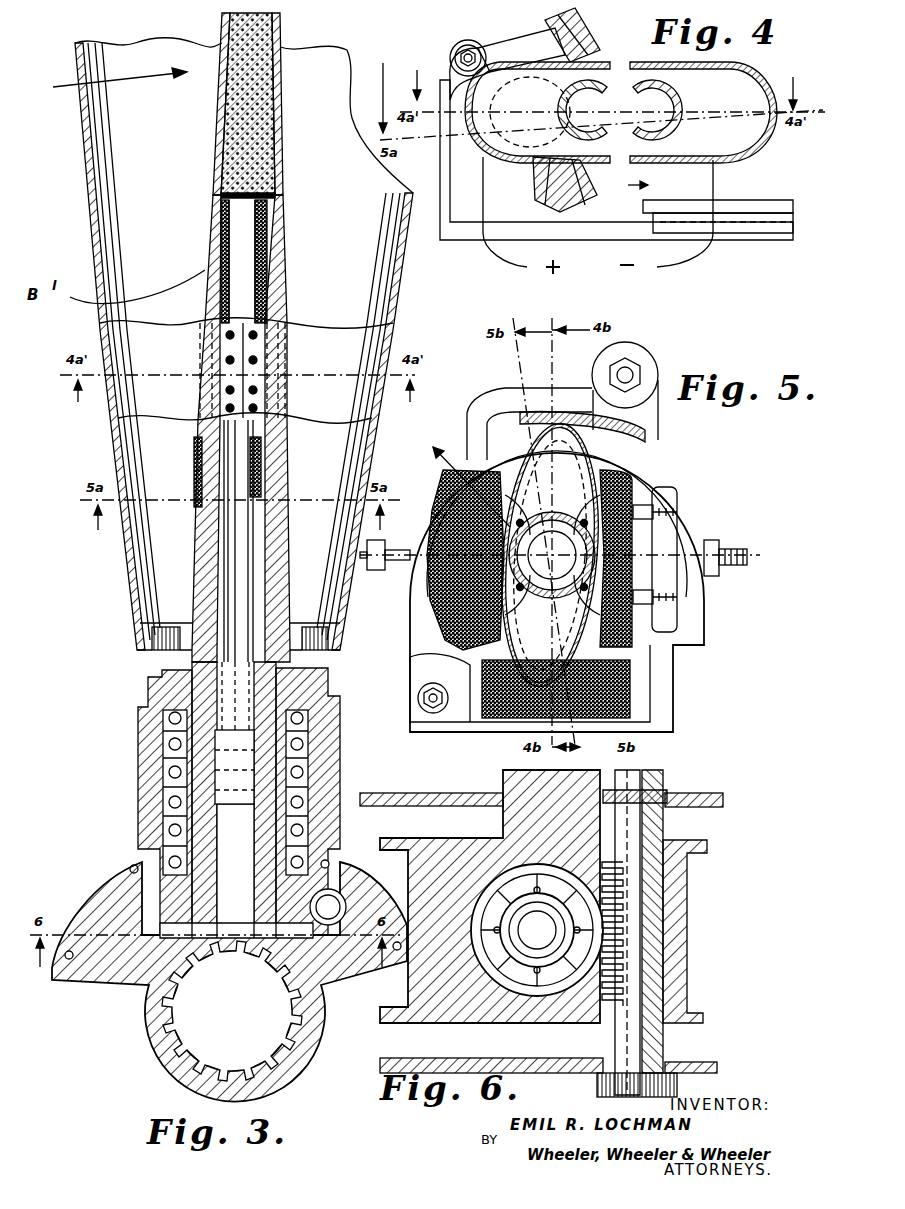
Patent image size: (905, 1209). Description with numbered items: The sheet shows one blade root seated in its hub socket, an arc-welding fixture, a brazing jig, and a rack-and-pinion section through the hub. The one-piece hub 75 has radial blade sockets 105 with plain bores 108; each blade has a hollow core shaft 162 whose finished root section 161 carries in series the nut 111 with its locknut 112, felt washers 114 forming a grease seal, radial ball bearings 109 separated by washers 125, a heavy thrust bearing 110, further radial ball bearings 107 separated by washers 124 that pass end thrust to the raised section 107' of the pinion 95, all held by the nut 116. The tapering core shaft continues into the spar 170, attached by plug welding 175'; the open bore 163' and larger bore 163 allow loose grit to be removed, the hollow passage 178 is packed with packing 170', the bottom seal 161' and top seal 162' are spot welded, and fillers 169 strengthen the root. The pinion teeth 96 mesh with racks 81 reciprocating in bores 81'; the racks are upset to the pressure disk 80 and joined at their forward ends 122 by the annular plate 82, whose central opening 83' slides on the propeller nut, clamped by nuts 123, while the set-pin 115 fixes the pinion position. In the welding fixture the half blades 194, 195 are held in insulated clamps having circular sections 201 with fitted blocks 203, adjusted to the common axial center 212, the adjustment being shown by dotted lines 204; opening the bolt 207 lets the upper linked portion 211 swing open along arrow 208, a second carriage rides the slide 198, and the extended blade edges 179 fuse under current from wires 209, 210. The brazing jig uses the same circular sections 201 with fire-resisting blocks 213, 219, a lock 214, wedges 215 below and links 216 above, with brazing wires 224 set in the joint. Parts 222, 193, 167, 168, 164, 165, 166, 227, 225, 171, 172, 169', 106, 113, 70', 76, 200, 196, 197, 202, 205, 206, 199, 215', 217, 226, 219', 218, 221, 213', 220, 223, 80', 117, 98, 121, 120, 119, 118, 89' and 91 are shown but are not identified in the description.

In FIG. 3, the bowl wall 222 is at (118, 80).
In FIG. 3, the section zone 193 is at (258, 392).
In FIG. 3, the spar 170 is at (221, 337).
In FIG. 3, the packing 170' is at (306, 95).
In FIG. 3, the hollow passage 178 is at (226, 145).
In FIG. 3, the top seal 162' is at (279, 191).
In FIG. 3, the inner strip / slot 167 is at (230, 262).
In FIG. 3, the slot 168 is at (196, 470).
In FIG. 3, the larger bore 163 is at (234, 677).
In FIG. 3, the bore 164 is at (234, 767).
In FIG. 3, the pin 165 is at (237, 861).
In FIG. 3, the shaft end 166 is at (237, 891).
In FIG. 3, the felt washers 114 is at (240, 735).
In FIG. 6, the felt washers 114 is at (474, 915).
In FIG. 3, the wall lining 227 is at (77, 178).
In FIG. 3, the inner lining 225 is at (115, 250).
In FIG. 3, the half blade 194 is at (398, 352).
In FIG. 4, the half blade 194 is at (690, 73).
In FIG. 5, the half blade 194 is at (656, 437).
In FIG. 3, the half blade 195 is at (106, 402).
In FIG. 4, the half blade 195 is at (455, 75).
In FIG. 5, the half blade 195 is at (661, 658).
In FIG. 3, the hollow core shaft 162 is at (310, 549).
In FIG. 3, the bowl bottom 171 is at (141, 601).
In FIG. 3, the bowl bottom right 172 is at (291, 612).
In FIG. 3, the filler 169 is at (340, 628).
In FIG. 3, the tab 169' is at (130, 641).
In FIG. 3, the nut 106 is at (340, 716).
In FIG. 3, the blade socket 105 is at (340, 740).
In FIG. 3, the radial ball bearings 107 is at (207, 790).
In FIG. 3, the raised section 107' is at (100, 862).
In FIG. 3, the bottom seal 161' is at (118, 673).
In FIG. 3, the nut 111 is at (318, 672).
In FIG. 3, the locknut 112 is at (330, 691).
In FIG. 3, the ring 113 is at (148, 700).
In FIG. 3, the radial ball bearings 109 is at (172, 745).
In FIG. 3, the washers 125 is at (312, 762).
In FIG. 3, the bore 108 is at (150, 793).
In FIG. 6, the bore 108 is at (478, 888).
In FIG. 3, the thrust bearing 110 is at (312, 790).
In FIG. 3, the root section 161 is at (126, 813).
In FIG. 4, the root section 161 is at (598, 110).
In FIG. 3, the washers 124 is at (312, 830).
In FIG. 3, the hub 75 is at (118, 976).
In FIG. 6, the hub 75 is at (688, 915).
In FIG. 3, the gear hub 70' is at (232, 1011).
In FIG. 3, the pinion teeth 96 is at (285, 999).
In FIG. 6, the pinion teeth 96 is at (600, 866).
In FIG. 3, the housing wall 76 is at (324, 1005).
In FIG. 6, the housing wall 76 is at (501, 830).
In FIG. 3, the rack 81 is at (348, 888).
In FIG. 6, the rack 81 is at (672, 921).
In FIG. 3, the pinion 95 is at (152, 898).
In FIG. 6, the pinion 95 is at (500, 871).
In FIG. 3, the nut 116 is at (160, 930).
In FIG. 6, the nut 116 is at (495, 983).
In FIG. 4, the bracket 200 is at (442, 160).
In FIG. 4, the slide 198 is at (745, 200).
In FIG. 4, the rod 196 is at (738, 238).
In FIG. 4, the rod end 197 is at (790, 242).
In FIG. 4, the ring 202 is at (645, 110).
In FIG. 4, the axial center 212 is at (559, 98).
In FIG. 5, the axial center 212 is at (566, 551).
In FIG. 4, the bolt 207 is at (468, 48).
In FIG. 5, the bolt 207 is at (654, 363).
In FIG. 4, the arrow 208 is at (505, 50).
In FIG. 5, the arrow 208 is at (431, 452).
In FIG. 4, the circular sections 201 is at (591, 32).
In FIG. 5, the circular sections 201 is at (436, 612).
In FIG. 4, the blocks 203 is at (598, 42).
In FIG. 4, the upper linked portion 211 is at (545, 47).
In FIG. 5, the upper linked portion 211 is at (495, 378).
In FIG. 4, the dotted lines 204 is at (540, 65).
In FIG. 4, the blade edges 179 is at (613, 70).
In FIG. 4, the plug welding 175' is at (706, 102).
In FIG. 5, the plug welding 175' is at (552, 560).
In FIG. 4, the block 205 is at (530, 186).
In FIG. 4, the block 206 is at (558, 206).
In FIG. 4, the arrow 199 is at (658, 178).
In FIG. 4, the wire 210 is at (510, 268).
In FIG. 4, the wire 209 is at (695, 268).
In FIG. 5, the brazing wires 224 is at (545, 482).
In FIG. 5, the wedges 215 is at (593, 689).
In FIG. 5, the magnet 215' is at (405, 659).
In FIG. 5, the plate 217 is at (680, 500).
In FIG. 5, the screw 226 is at (640, 519).
In FIG. 5, the block 219 is at (686, 594).
In FIG. 5, the screw 219' is at (689, 462).
In FIG. 5, the screw 218 is at (747, 574).
In FIG. 5, the screw 221 is at (386, 566).
In FIG. 5, the links 216 is at (645, 430).
In FIG. 5, the block 213 is at (431, 668).
In FIG. 5, the bracket 213' is at (476, 673).
In FIG. 5, the lock 214 is at (465, 716).
In FIG. 5, the base 220 is at (674, 716).
In FIG. 5, the base plate 223 is at (495, 732).
In FIG. 6, the pressure disk 80 is at (431, 789).
In FIG. 6, the block 80' is at (486, 774).
In FIG. 6, the set-pin 115 is at (537, 930).
In FIG. 6, the open bore 163' is at (539, 930).
In FIG. 6, the boss 117 is at (510, 1000).
In FIG. 6, the teeth 98 is at (610, 995).
In FIG. 6, the shaft 121 is at (603, 790).
In FIG. 6, the bore 81' is at (698, 874).
In FIG. 6, the flange 120 is at (694, 792).
In FIG. 6, the cap 119 is at (603, 796).
In FIG. 6, the plate 118 is at (695, 1023).
In FIG. 6, the annular plate 82 is at (452, 1058).
In FIG. 6, the central opening 83' is at (488, 1048).
In FIG. 6, the tab 89' is at (380, 1036).
In FIG. 6, the plate 91 is at (548, 1057).
In FIG. 6, the forward ends 122 is at (560, 1052).
In FIG. 6, the nuts 123 is at (598, 1098).